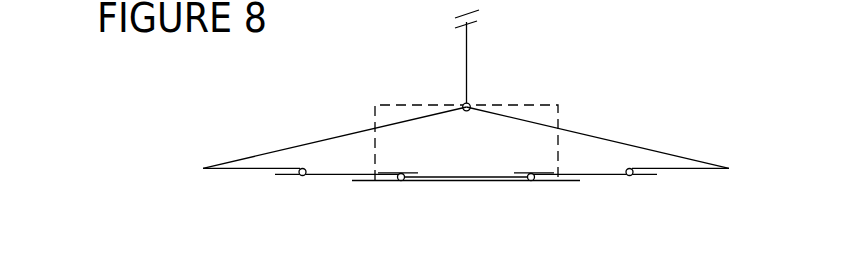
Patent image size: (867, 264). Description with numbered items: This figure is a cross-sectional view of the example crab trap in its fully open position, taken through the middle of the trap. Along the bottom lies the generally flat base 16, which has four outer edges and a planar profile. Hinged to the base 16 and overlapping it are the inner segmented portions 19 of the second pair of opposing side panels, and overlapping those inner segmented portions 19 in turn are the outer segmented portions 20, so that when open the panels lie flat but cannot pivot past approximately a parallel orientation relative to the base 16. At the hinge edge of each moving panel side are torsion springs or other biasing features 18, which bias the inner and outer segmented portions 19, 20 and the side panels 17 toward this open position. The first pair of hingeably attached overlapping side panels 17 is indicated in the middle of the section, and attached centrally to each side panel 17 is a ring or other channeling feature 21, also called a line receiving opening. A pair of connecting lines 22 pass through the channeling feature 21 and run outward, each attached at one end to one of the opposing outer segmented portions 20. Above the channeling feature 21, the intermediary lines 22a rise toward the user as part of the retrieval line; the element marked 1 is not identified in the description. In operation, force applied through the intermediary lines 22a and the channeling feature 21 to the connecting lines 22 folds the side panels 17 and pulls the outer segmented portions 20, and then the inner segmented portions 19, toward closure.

The support arm 1 is at (458, 58).
The base 16 is at (495, 181).
The side panels 17 is at (403, 105).
The torsion springs or other biasing features 18 is at (298, 175).
The inner segmented portions 19 is at (333, 176).
The outer segmented portions 20 is at (238, 169).
The channeling feature 21 is at (470, 106).
The connecting lines 22 is at (258, 155).
The intermediary lines 22a is at (468, 48).